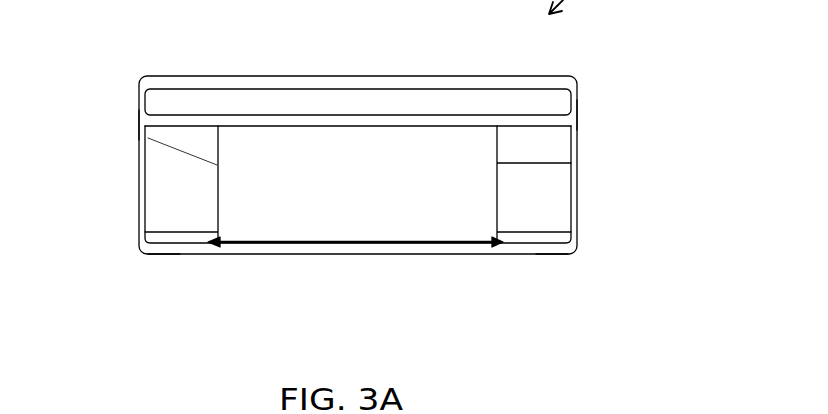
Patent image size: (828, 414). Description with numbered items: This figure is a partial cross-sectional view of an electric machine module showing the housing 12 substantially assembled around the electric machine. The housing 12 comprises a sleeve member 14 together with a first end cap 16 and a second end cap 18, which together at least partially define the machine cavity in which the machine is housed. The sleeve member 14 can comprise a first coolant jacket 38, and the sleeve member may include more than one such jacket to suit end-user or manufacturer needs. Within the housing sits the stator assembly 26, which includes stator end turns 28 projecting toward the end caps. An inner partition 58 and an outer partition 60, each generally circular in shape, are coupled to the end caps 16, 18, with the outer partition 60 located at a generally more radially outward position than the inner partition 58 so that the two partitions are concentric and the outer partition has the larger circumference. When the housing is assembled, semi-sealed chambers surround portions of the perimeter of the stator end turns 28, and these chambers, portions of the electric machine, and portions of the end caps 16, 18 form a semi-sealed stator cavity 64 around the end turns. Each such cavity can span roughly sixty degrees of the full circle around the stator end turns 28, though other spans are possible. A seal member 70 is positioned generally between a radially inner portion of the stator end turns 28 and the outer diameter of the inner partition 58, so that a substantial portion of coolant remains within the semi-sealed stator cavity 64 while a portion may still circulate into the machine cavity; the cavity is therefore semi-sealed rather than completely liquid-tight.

The housing 12 is at (215, 57).
The sleeve member 14 is at (385, 78).
The first end cap 16 is at (578, 118).
The second end cap 18 is at (140, 128).
The stator assembly 26 is at (381, 241).
The stator end turns 28 is at (164, 199).
The first coolant jacket 38 is at (280, 105).
The inner partition 58 is at (181, 255).
The outer partition 60 is at (162, 128).
The semi-sealed stator cavity 64 is at (195, 143).
The seal member 70 is at (221, 244).